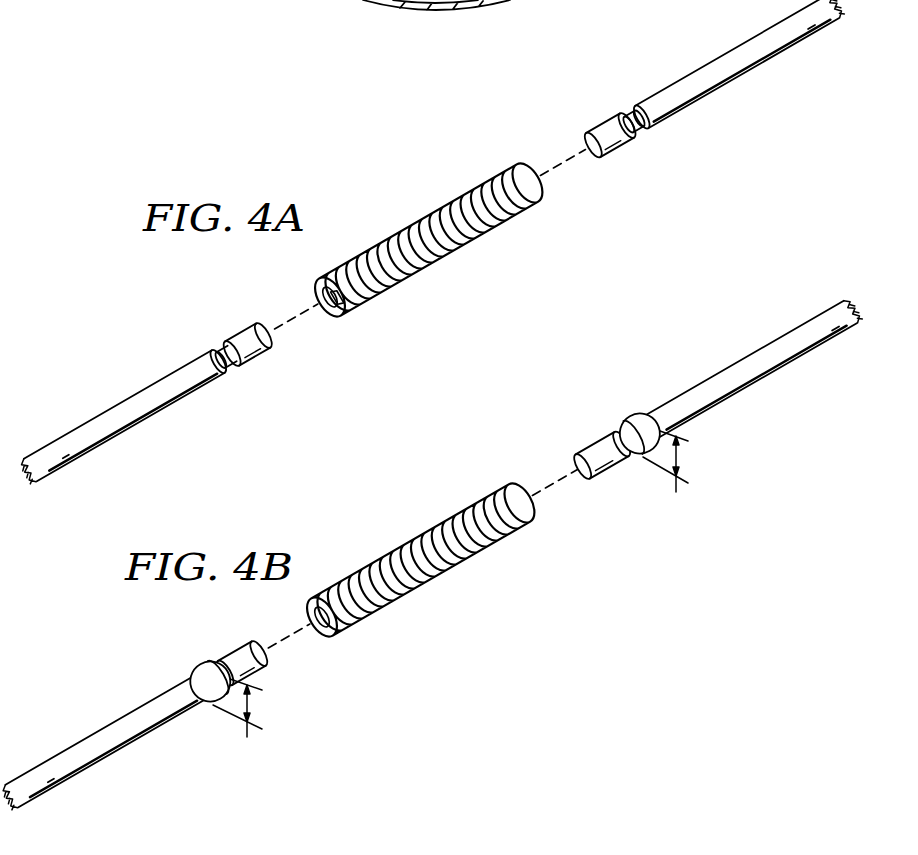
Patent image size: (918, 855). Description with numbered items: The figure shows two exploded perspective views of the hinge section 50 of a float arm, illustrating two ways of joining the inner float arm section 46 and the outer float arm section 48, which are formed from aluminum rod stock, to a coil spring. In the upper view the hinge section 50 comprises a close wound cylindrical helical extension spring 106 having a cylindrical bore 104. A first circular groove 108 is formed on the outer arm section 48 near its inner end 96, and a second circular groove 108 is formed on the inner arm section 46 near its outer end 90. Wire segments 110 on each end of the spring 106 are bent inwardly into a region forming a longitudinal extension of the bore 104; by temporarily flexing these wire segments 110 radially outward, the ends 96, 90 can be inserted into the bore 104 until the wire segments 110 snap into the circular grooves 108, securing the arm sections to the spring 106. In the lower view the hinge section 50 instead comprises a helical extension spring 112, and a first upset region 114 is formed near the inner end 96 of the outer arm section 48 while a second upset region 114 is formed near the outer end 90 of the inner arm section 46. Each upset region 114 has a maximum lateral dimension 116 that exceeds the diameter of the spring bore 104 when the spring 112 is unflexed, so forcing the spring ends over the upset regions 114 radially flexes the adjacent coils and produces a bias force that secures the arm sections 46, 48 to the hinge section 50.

In FIG. 4A, the inner float arm section 46 is at (125, 400).
In FIG. 4B, the inner float arm section 46 is at (92, 735).
In FIG. 4A, the outer float arm section 48 is at (737, 48).
In FIG. 4B, the outer float arm section 48 is at (745, 358).
In FIG. 4A, the hinge section 50 is at (415, 175).
In FIG. 4A, the outer end of inner arm section 90 is at (237, 335).
In FIG. 4B, the outer end of inner arm section 90 is at (246, 645).
In FIG. 4A, the inner end of outer arm section 96 is at (605, 122).
In FIG. 4B, the inner end of outer arm section 96 is at (598, 441).
In FIG. 4A, the cylindrical bore 104 is at (319, 291).
In FIG. 4B, the cylindrical bore 104 is at (322, 630).
In FIG. 4A, the close wound cylindrical helical extension spring 106 is at (382, 242).
In FIG. 4A, the circular groove 108 is at (231, 366).
In FIG. 4A, the wire segment 110 is at (350, 303).
In FIG. 4B, the close wound cylindrical helical extension spring 112 is at (407, 543).
In FIG. 4B, the upset region 114 is at (202, 666).
In FIG. 4B, the maximum lateral dimension 116 is at (454, 604).